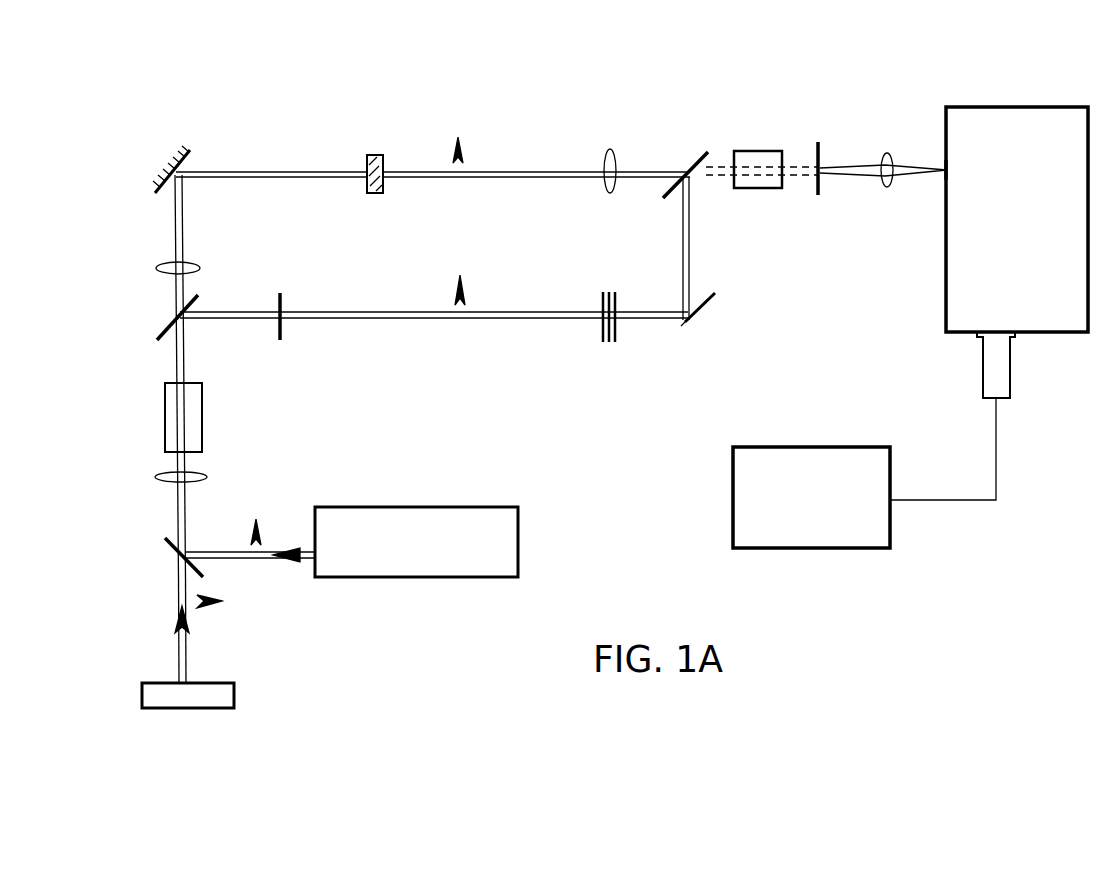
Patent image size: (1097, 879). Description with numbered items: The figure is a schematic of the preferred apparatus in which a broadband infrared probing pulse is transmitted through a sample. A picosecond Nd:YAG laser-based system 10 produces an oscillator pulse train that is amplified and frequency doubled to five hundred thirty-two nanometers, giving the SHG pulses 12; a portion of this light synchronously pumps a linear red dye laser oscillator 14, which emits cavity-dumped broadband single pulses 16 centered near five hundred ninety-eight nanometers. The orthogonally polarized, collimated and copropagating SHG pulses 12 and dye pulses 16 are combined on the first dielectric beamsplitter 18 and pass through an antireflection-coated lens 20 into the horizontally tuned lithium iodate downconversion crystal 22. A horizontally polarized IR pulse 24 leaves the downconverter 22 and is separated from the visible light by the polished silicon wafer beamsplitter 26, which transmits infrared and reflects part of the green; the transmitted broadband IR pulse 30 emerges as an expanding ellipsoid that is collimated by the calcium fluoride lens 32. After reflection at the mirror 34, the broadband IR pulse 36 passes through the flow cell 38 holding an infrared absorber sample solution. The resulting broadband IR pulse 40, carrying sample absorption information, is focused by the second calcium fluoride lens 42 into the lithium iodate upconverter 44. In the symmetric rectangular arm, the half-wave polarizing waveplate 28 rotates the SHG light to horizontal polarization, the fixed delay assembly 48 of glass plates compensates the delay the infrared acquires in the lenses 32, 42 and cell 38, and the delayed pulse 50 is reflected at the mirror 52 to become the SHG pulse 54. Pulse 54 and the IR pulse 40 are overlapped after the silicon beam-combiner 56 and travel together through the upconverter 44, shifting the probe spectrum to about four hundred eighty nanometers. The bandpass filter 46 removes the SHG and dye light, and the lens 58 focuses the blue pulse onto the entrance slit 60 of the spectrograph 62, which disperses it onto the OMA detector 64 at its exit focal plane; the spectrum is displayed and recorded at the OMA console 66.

The laser-based system 10 is at (142, 692).
The SHG pulses 12 is at (178, 648).
The red dye laser oscillator 14 is at (423, 577).
The broadband single pulses 16 is at (240, 559).
The dielectric beamsplitter BS1 18 is at (165, 538).
The lens 20 is at (158, 475).
The downconversion crystal 22 is at (165, 402).
The IR pulse 24 is at (185, 358).
The silicon wafer BS2 26 is at (155, 340).
The half-wave polarizing waveplate 28 is at (282, 340).
The broadband IR pulse 30 is at (172, 290).
The CaF2 lens 32 is at (160, 265).
The mirror 34 is at (190, 160).
The broadband IR pulse 36 is at (258, 172).
The flow cell 38 is at (383, 187).
The BBIR pulse 40 is at (522, 172).
The CaF2 lens 42 is at (612, 150).
The upconverter 44 is at (750, 151).
The bandpass filter 46 is at (818, 195).
The fixed delay assembly 48 is at (602, 302).
The SHG pulse 50 is at (640, 313).
The mirror 52 is at (715, 295).
The delayed SHG pulses 54 is at (690, 270).
The silicon beam-combiner BS3 56 is at (708, 152).
The lens 58 is at (893, 185).
The entrance slit 60 is at (952, 165).
The spectrograph 62 is at (946, 285).
The OMA detector 64 is at (983, 385).
The OMA console 66 is at (733, 512).